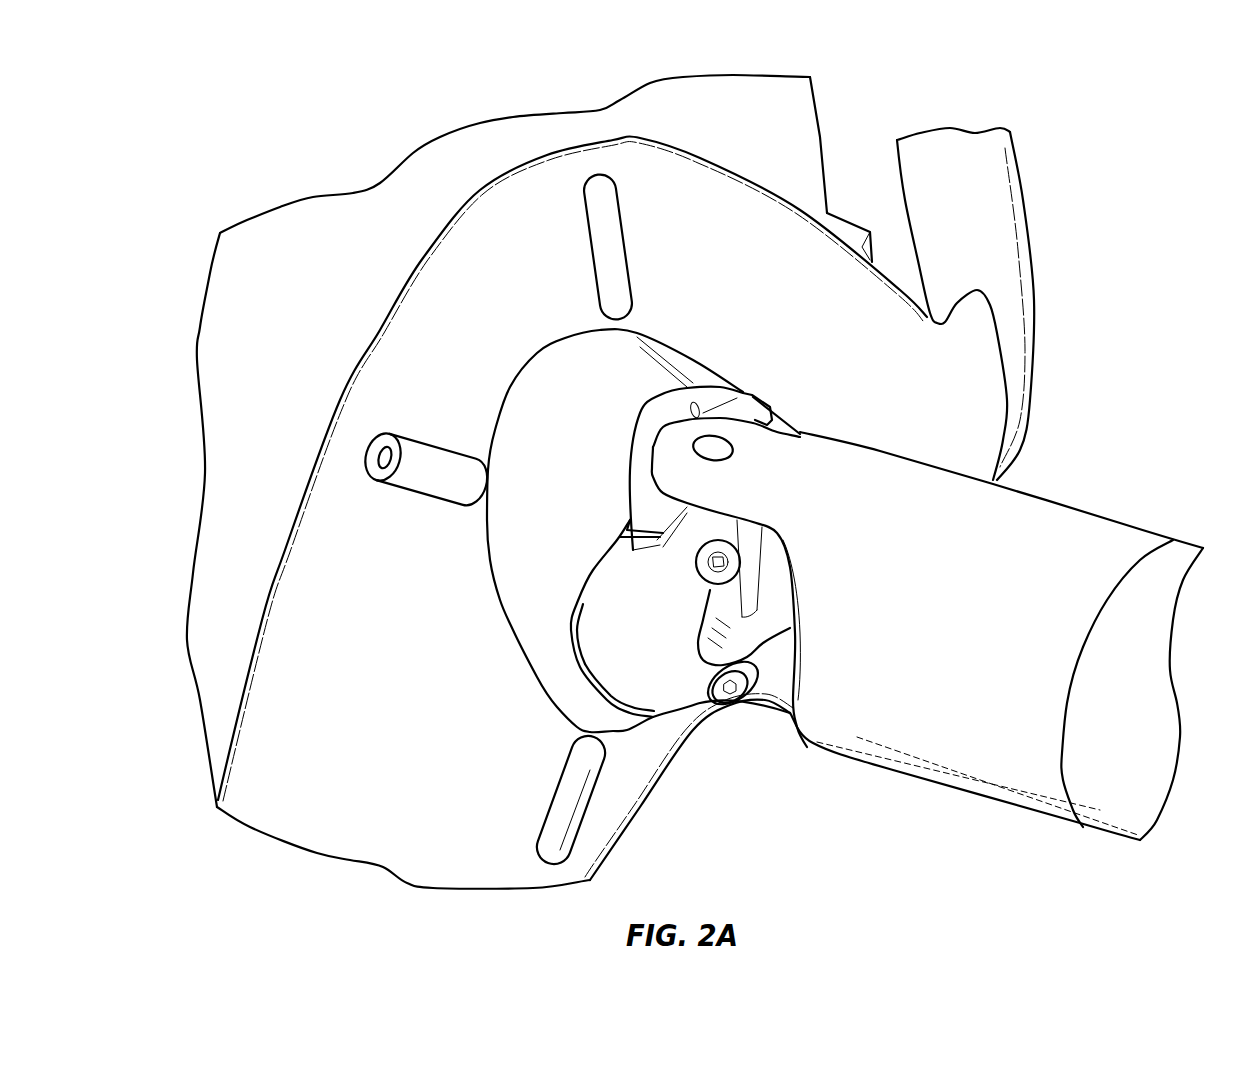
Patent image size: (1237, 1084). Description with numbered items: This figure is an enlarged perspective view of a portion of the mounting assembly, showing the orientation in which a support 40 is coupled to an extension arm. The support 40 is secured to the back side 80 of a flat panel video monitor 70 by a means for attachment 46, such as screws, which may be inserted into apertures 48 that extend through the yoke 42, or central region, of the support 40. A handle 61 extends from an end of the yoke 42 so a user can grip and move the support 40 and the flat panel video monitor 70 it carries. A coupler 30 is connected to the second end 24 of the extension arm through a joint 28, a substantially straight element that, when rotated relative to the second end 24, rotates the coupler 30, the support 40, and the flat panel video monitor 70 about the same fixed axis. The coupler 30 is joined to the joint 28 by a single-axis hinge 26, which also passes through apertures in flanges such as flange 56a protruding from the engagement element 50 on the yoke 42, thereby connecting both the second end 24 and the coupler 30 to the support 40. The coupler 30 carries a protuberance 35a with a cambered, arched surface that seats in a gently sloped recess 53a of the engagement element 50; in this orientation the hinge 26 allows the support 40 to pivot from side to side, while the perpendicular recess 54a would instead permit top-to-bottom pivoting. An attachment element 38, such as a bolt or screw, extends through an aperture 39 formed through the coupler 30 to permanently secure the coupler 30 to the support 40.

The back side 80 is at (300, 310).
The flat panel video monitor 70 is at (822, 133).
The support 40 is at (1038, 423).
The handle 61 is at (993, 250).
The second end 24 is at (1098, 793).
The joint 28 is at (912, 738).
The hinge 26 is at (720, 450).
The engagement element 50 is at (610, 533).
The recess 54a is at (663, 413).
The flange 56a is at (653, 512).
The coupler 30 is at (688, 693).
The recess 53a is at (577, 645).
The protuberance 35a is at (575, 664).
The attachment element 38 is at (700, 567).
The aperture 39 is at (760, 597).
The aperture 48 is at (628, 273).
The means for attachment 46 is at (380, 440).
The yoke 42 is at (620, 787).